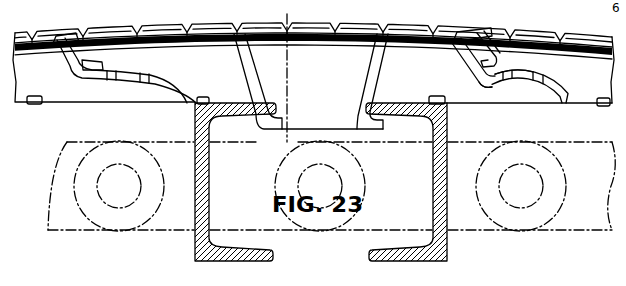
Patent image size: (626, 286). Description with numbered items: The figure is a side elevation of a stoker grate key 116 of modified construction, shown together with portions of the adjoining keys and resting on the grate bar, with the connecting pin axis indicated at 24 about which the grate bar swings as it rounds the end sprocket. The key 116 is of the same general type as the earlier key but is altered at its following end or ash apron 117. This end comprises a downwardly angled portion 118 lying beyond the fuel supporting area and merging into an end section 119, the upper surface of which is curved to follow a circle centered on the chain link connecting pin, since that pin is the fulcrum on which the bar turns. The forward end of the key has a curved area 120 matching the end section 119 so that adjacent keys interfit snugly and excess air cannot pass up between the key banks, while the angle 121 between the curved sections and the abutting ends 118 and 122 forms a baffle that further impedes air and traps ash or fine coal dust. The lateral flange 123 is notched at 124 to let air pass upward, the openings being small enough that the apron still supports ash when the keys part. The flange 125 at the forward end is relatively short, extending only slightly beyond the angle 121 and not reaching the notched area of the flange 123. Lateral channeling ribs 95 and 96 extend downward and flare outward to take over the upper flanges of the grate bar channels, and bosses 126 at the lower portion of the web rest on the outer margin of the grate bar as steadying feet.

The longitudinal center line of car 24 is at (283, 144).
The lateral channeling rib 95 is at (367, 82).
The lateral channeling rib 96 is at (253, 57).
The key 116 is at (313, 63).
The ash apron 117 is at (522, 104).
The downwardly angled portion 118 is at (470, 67).
The end section 119 is at (533, 84).
The curved area 120 is at (572, 88).
The angle 121 is at (480, 86).
The abutting end 122 is at (481, 62).
The lateral flange 123 is at (500, 85).
The notch 124 is at (517, 71).
The flange 125 is at (79, 35).
The boss 126 is at (209, 91).